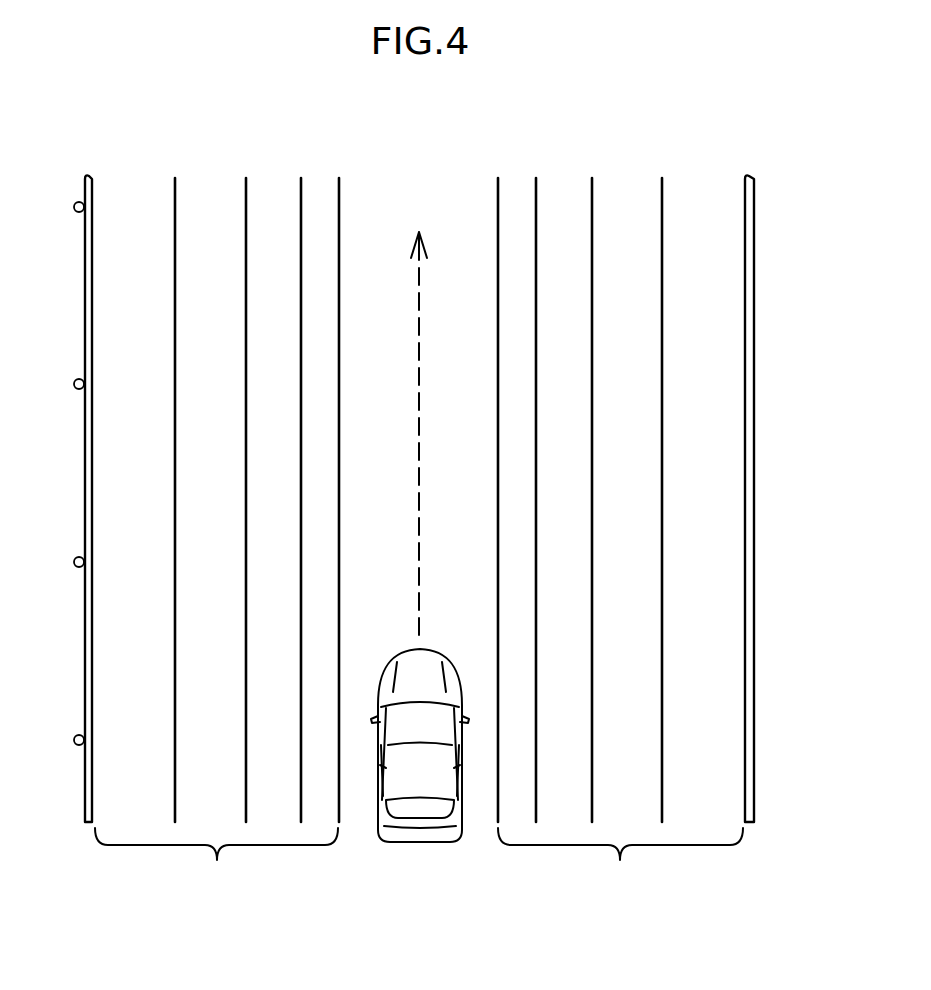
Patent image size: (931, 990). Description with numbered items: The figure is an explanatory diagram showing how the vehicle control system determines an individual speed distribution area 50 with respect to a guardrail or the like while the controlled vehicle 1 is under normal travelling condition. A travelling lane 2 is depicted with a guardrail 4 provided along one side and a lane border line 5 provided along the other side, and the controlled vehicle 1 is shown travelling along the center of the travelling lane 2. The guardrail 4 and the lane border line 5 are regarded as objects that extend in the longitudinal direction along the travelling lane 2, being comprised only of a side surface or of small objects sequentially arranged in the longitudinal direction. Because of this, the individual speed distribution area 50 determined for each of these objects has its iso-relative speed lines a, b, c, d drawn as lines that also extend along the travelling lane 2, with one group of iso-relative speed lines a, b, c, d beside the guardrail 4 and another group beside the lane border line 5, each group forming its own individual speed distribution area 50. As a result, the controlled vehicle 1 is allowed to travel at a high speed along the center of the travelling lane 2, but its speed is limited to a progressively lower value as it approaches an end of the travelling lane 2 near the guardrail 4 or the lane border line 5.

The controlled vehicle 1 is at (417, 845).
The travelling lane 2 is at (713, 242).
The guardrail 4 is at (83, 319).
The lane border line 5 is at (755, 401).
The individual speed distribution area 50 is at (419, 859).
The iso-relative speed line a is at (175, 186).
The iso-relative speed line b is at (246, 186).
The iso-relative speed line c is at (301, 186).
The iso-relative speed line d is at (339, 186).